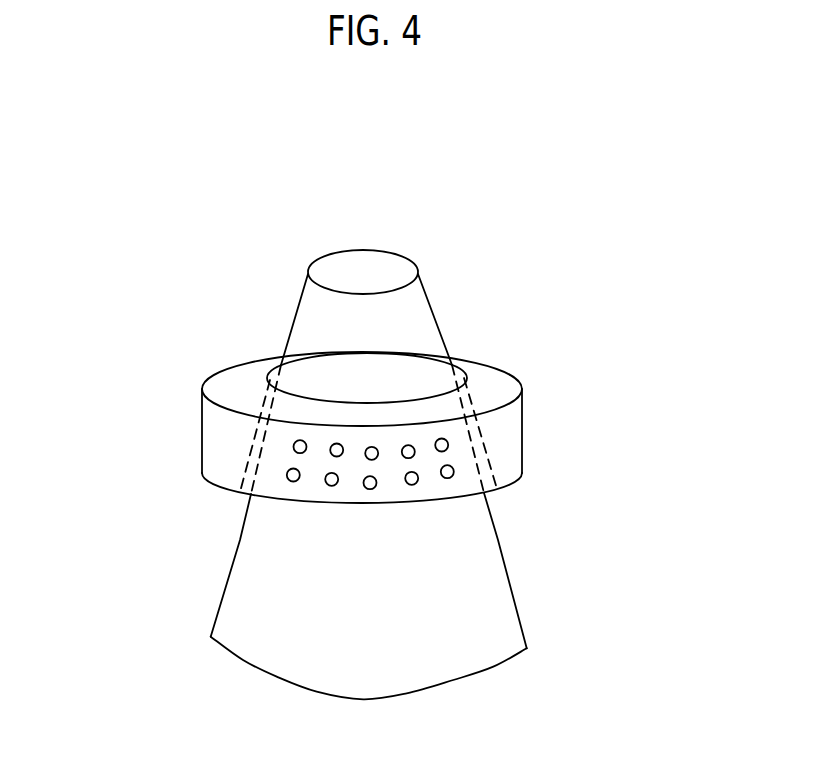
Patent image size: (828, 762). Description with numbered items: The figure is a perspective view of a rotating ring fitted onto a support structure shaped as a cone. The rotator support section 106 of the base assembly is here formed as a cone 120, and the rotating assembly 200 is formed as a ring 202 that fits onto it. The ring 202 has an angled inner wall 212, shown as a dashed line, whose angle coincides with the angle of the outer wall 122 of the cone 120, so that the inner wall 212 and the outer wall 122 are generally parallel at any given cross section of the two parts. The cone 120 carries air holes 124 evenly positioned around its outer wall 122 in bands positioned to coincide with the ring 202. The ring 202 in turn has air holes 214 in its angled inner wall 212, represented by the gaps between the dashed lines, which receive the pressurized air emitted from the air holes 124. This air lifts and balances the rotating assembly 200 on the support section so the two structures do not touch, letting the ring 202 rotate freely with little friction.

The rotator support section 106 is at (394, 417).
The cone 120 is at (517, 593).
The outer wall 122 is at (470, 638).
The air holes 124 is at (289, 479).
The rotating assembly 200 is at (345, 430).
The ring 202 is at (525, 448).
The angled inner wall 212 is at (248, 448).
The air holes 214 is at (238, 458).